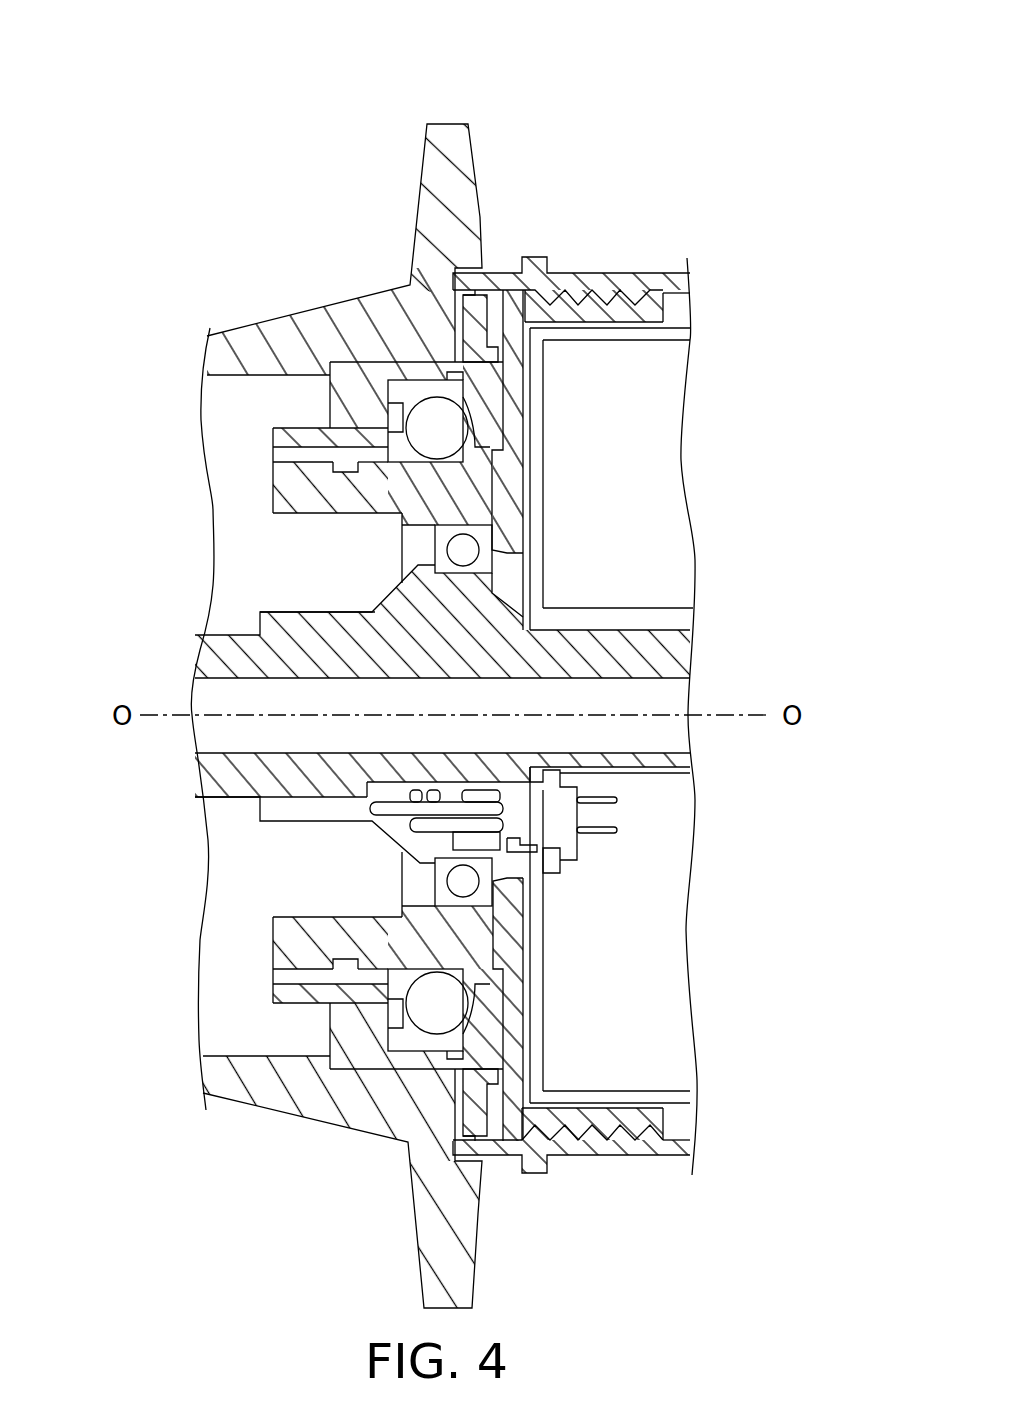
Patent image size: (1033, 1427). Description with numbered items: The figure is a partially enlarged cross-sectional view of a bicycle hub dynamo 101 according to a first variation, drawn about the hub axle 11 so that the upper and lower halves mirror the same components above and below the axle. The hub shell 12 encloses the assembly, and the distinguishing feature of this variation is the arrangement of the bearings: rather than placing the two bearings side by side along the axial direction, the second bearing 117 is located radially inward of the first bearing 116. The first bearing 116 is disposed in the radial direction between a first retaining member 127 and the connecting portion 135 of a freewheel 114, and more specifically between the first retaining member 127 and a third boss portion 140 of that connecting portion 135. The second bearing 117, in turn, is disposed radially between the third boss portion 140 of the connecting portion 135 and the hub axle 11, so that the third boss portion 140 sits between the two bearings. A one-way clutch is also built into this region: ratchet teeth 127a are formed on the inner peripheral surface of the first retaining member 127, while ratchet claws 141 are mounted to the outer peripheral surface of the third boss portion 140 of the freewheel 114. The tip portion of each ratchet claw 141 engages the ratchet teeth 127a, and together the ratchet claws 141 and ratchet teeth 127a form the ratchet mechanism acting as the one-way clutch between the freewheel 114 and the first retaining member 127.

The dynamo 101 is at (706, 100).
The rotor hub 12 is at (242, 300).
The first retaining member 127 is at (355, 370).
The ratchet teeth 127a is at (340, 445).
The connecting portion 135 is at (593, 286).
The freewheel 114 is at (648, 262).
The first bearing 116 is at (360, 405).
The second bearing 117 is at (420, 548).
The ratchet claws 141 is at (293, 421).
The third boss portion 140 is at (280, 490).
The hub axle 11 is at (221, 666).